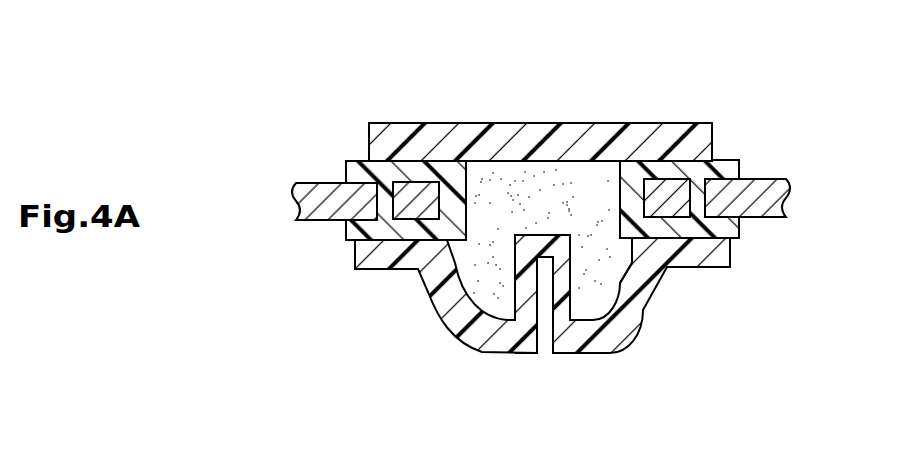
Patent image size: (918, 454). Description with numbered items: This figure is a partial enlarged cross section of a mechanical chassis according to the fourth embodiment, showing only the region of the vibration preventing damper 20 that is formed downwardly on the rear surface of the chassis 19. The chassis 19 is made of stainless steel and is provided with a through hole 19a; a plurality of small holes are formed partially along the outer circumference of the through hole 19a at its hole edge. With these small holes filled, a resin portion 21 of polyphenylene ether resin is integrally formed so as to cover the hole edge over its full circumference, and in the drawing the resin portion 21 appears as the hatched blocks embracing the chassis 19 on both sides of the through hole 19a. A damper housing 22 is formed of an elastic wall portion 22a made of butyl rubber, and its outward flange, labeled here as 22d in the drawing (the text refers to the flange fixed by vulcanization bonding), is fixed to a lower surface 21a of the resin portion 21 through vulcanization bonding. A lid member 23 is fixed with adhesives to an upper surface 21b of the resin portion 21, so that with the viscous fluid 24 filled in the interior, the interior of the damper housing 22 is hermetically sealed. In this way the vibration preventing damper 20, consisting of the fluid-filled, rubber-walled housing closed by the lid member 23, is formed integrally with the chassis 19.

The chassis 19 is at (369, 205).
The through hole 19a is at (455, 200).
The vibration preventing damper 20 is at (382, 93).
The resin portion 21 is at (714, 213).
The lower surface of the resin portion 21a is at (643, 243).
The upper surface of the resin portion 21b is at (650, 178).
The damper housing 22 is at (527, 356).
The elastic wall portion 22a is at (462, 343).
The case flange 22d is at (360, 270).
The lid member 23 is at (510, 123).
The viscous fluid 24 is at (562, 190).